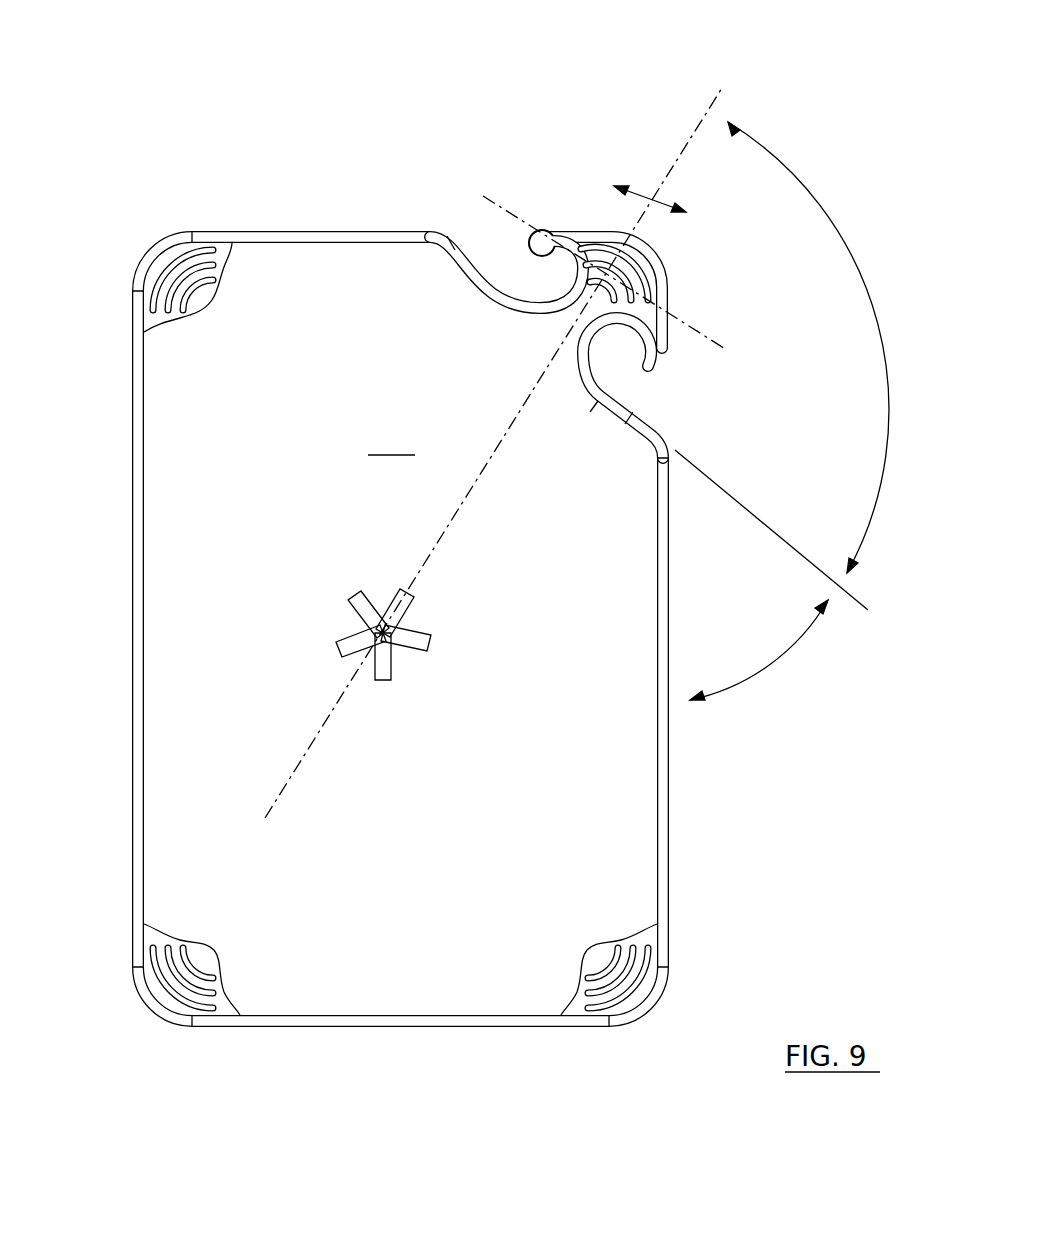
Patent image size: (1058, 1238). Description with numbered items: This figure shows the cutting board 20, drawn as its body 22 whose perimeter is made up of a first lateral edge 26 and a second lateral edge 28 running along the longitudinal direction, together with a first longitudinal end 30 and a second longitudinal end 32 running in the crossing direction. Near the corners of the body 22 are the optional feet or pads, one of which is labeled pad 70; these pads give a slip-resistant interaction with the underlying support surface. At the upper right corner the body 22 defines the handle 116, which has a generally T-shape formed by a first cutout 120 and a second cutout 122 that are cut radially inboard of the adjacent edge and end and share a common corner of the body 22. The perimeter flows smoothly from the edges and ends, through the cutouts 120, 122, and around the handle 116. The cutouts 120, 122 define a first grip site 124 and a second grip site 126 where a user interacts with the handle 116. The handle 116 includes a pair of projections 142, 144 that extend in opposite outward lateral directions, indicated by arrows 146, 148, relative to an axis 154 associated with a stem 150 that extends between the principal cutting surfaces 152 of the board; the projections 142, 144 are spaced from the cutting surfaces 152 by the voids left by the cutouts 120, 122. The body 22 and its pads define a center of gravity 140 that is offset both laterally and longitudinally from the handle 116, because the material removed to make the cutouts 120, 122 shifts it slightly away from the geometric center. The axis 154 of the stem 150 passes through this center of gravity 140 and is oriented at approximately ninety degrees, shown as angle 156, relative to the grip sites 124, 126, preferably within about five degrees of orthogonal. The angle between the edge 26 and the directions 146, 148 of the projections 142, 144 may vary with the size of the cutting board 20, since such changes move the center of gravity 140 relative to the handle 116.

The cutting board 20 is at (126, 162).
The body 22 is at (416, 624).
The first lateral edge 26 is at (671, 779).
The second lateral edge 28 is at (136, 736).
The first longitudinal end 30 is at (322, 231).
The second longitudinal end 32 is at (396, 1032).
The pad 70 is at (622, 268).
The handle 116 is at (702, 247).
The first cutout 120 is at (610, 362).
The second cutout 122 is at (522, 278).
The first grip site 124 is at (602, 250).
The second grip site 126 is at (655, 343).
The center of gravity 140 is at (396, 694).
The projection 142 is at (568, 231).
The projection 144 is at (668, 278).
The arrow 146 is at (642, 198).
The arrow 148 is at (664, 206).
The stem 150 is at (582, 312).
The principle cutting surfaces 152 is at (394, 440).
The axis 154 is at (722, 88).
The angle 156 is at (875, 316).